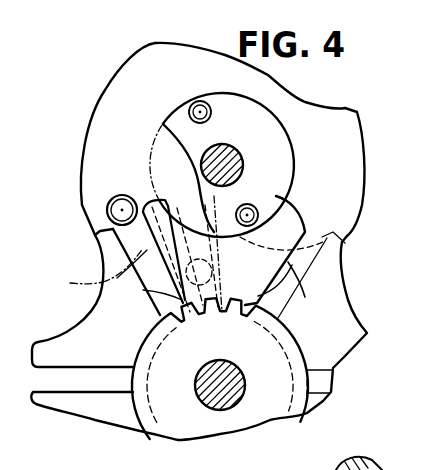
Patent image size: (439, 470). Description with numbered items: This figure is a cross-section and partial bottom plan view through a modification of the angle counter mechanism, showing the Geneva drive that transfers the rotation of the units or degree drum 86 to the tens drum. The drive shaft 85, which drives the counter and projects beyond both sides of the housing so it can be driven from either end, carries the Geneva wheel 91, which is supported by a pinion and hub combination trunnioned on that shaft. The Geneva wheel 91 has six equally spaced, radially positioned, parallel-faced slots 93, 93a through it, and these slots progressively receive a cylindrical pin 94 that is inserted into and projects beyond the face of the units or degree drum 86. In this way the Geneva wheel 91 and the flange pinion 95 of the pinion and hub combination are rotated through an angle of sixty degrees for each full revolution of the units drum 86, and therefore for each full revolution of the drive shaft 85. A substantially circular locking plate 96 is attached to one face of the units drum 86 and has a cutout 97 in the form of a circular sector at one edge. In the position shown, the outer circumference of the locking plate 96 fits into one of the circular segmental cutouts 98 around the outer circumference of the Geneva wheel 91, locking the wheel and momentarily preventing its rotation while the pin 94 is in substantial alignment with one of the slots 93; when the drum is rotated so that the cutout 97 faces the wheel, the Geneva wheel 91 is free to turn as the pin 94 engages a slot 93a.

The drive shaft 85 is at (232, 368).
The units or degree drum 86 is at (348, 157).
The Geneva wheel 91 is at (338, 292).
The radially positioned parallel-faced slot 93 is at (140, 262).
The radially positioned parallel-faced slot 93a is at (301, 282).
The cylindrical pin 94 is at (113, 200).
The flange pinion 95 is at (247, 302).
The locking plate 96 is at (284, 132).
The cutout 97 is at (160, 132).
The circular segmental cutout 98 is at (182, 248).